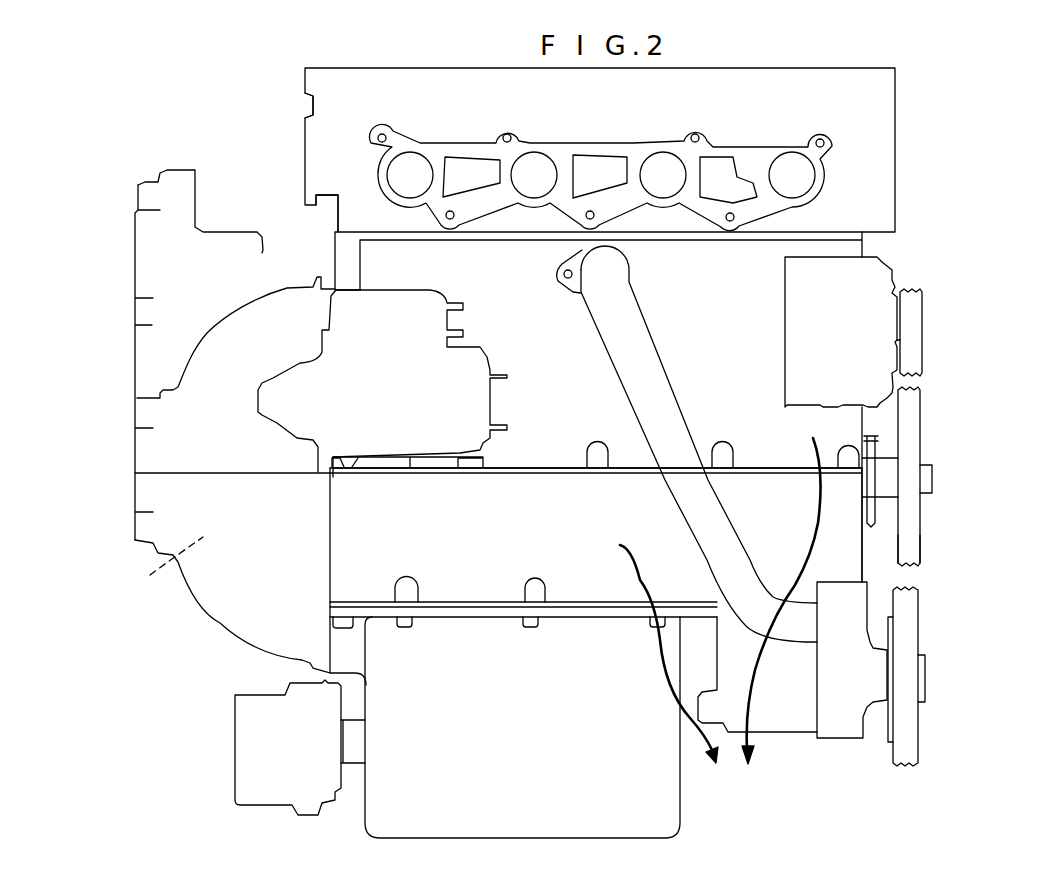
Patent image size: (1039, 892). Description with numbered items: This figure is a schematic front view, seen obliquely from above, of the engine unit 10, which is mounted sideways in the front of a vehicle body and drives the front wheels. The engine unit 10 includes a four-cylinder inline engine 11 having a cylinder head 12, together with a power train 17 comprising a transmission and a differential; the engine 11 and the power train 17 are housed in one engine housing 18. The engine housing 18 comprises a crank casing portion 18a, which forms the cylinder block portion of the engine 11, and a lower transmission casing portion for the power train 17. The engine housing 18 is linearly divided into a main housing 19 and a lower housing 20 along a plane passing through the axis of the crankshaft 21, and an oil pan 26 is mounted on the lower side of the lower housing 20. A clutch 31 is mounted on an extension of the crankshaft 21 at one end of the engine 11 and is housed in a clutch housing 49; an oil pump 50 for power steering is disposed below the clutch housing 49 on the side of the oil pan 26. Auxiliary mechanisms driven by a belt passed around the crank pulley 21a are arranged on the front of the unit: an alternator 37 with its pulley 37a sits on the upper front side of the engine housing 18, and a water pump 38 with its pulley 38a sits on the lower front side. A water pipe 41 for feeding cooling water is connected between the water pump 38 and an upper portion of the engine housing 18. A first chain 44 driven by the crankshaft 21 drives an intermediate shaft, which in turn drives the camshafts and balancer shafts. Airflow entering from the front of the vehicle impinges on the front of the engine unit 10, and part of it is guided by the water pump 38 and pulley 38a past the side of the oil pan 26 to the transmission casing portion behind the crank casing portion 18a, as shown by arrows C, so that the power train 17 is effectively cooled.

The engine unit 10 is at (210, 103).
The four-cylinder inline engine 11 is at (905, 163).
The cylinder head 12 is at (310, 143).
The power train 17 is at (110, 301).
The engine housing 18 is at (318, 247).
The crank casing portion 18a is at (348, 530).
The main housing 19 is at (722, 312).
The lower housing 20 is at (608, 546).
The crankshaft 21 is at (885, 470).
The crank pulley 21a is at (913, 550).
The oil pan 26 is at (660, 797).
The clutch 31 is at (155, 565).
The alternator 37 is at (893, 270).
The alternator pulley 37a is at (910, 337).
The water pump 38 is at (790, 717).
The water pump pulley 38a is at (907, 633).
The water pipe 41 is at (628, 373).
The first chain 44 is at (877, 520).
The clutch housing 49 is at (220, 623).
The oil pump 50 is at (250, 745).
The arrows C is at (813, 517).